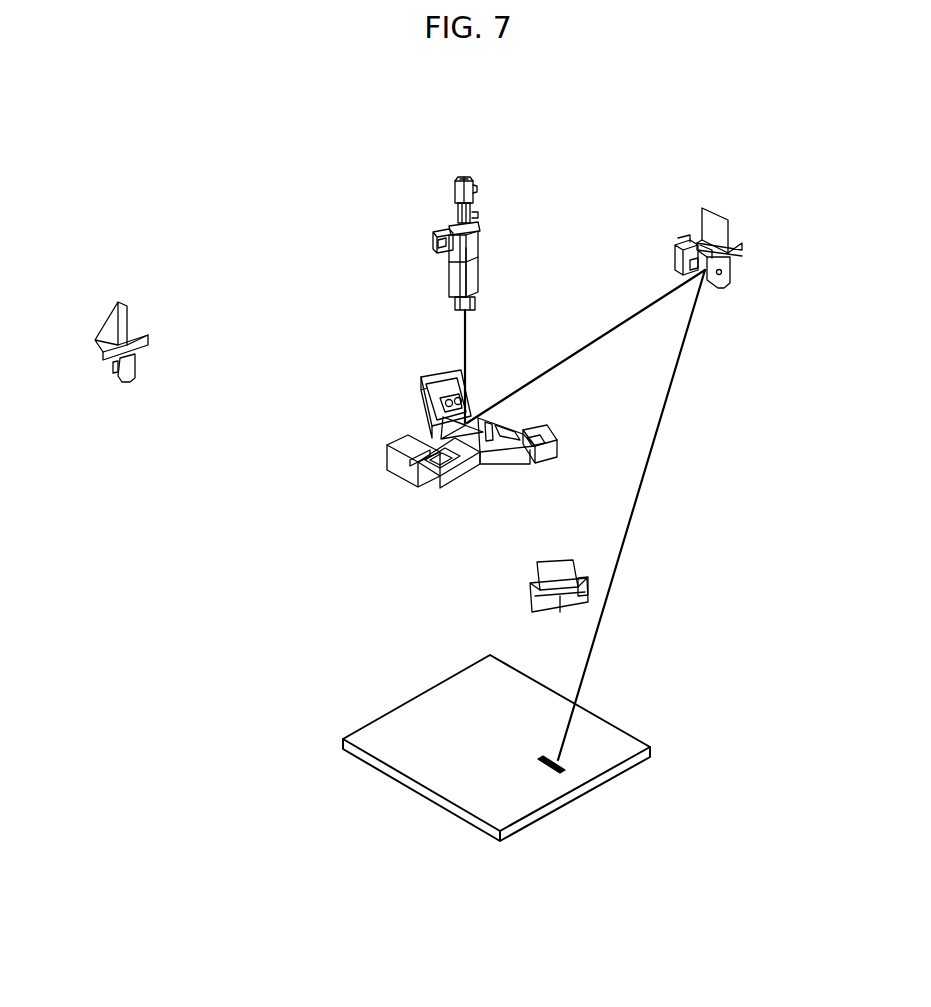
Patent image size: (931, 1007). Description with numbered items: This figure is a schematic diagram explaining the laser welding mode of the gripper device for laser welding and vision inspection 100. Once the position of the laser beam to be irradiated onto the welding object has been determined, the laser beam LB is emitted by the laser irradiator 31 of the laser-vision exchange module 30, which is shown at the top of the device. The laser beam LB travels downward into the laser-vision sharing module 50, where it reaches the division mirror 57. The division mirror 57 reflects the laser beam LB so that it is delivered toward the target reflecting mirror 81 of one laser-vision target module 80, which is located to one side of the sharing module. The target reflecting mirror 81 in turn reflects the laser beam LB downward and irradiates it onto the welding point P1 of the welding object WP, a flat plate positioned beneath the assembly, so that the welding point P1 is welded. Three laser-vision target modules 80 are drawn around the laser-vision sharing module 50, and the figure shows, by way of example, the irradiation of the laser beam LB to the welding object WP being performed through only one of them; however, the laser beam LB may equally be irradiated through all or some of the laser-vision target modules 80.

The gripper device for laser welding and vision inspection 100 is at (444, 130).
The laser-vision exchange module 30 is at (483, 243).
The laser irradiator 31 is at (462, 192).
The laser-vision sharing module 50 is at (427, 454).
The division mirror 57 is at (462, 431).
The laser-vision target module 80 is at (746, 229).
The target reflecting mirror 81 is at (702, 246).
The laser beam LB is at (467, 358).
The welding object WP is at (410, 773).
The welding point P1 is at (563, 772).